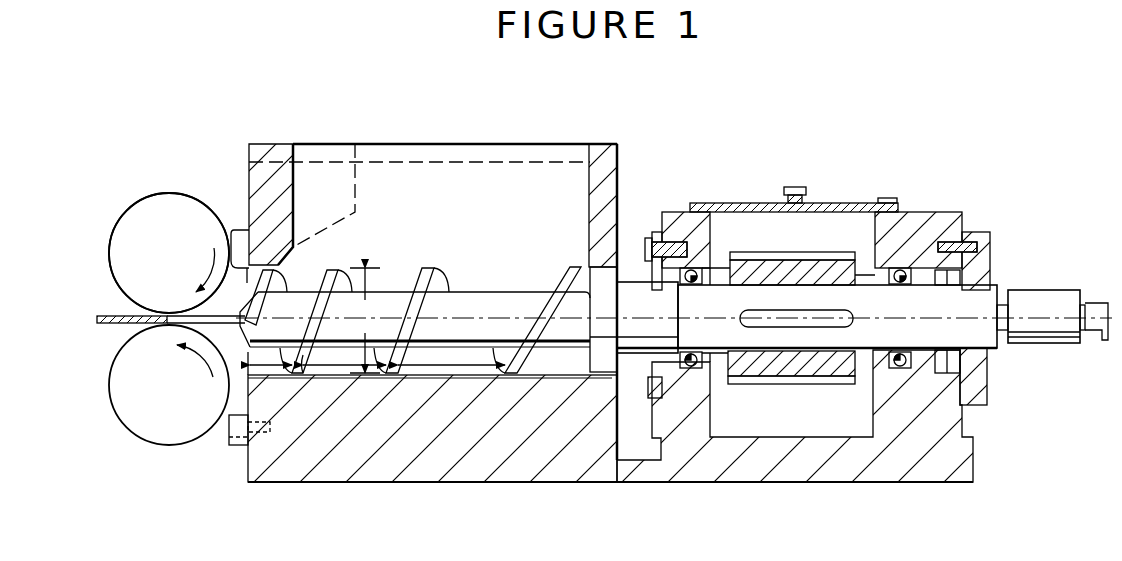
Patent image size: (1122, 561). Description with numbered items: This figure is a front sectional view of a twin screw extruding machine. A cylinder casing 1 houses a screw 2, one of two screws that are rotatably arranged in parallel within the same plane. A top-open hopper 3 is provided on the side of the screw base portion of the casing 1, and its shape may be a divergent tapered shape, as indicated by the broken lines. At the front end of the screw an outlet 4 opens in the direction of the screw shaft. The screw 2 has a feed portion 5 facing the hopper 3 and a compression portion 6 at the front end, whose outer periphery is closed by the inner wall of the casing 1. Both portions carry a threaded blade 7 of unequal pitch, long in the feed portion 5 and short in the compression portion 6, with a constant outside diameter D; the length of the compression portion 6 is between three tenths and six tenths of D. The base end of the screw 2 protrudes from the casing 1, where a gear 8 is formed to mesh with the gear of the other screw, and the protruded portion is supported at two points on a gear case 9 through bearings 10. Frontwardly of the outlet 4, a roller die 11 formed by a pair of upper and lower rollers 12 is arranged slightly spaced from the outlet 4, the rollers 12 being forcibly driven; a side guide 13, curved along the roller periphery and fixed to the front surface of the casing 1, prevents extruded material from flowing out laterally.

The cylinder casing 1 is at (275, 141).
The screw 2 is at (517, 300).
The hopper 3 is at (512, 143).
The outlet 4 is at (238, 230).
The feed portion 5 is at (455, 378).
The compression portion 6 is at (270, 367).
The threaded blade 7 is at (420, 276).
The gear 8 is at (762, 250).
The gear case 9 is at (846, 201).
The bearing 10 is at (694, 270).
The roller die 11 is at (191, 206).
The roller 12 is at (153, 200).
The side guide 13 is at (228, 452).